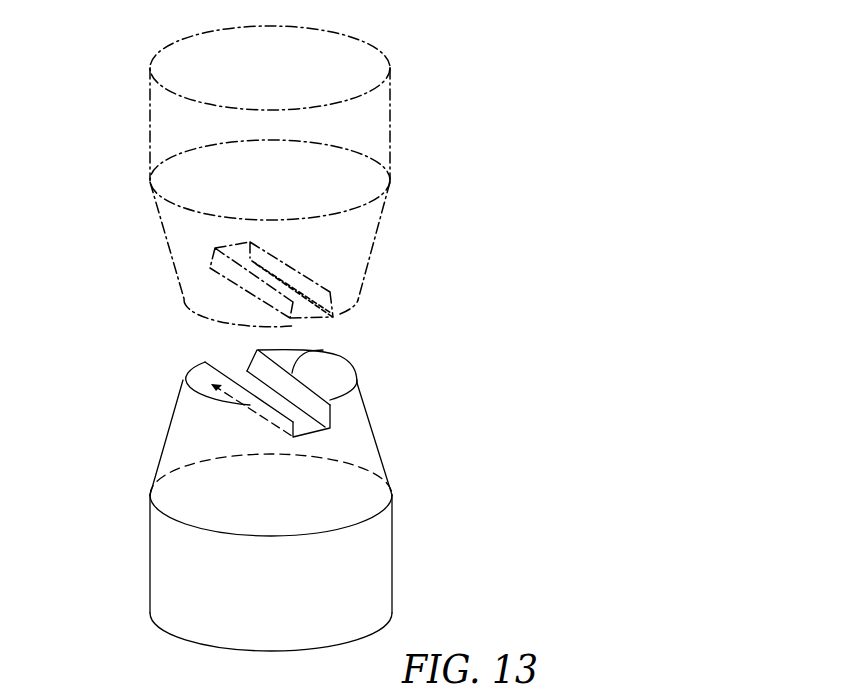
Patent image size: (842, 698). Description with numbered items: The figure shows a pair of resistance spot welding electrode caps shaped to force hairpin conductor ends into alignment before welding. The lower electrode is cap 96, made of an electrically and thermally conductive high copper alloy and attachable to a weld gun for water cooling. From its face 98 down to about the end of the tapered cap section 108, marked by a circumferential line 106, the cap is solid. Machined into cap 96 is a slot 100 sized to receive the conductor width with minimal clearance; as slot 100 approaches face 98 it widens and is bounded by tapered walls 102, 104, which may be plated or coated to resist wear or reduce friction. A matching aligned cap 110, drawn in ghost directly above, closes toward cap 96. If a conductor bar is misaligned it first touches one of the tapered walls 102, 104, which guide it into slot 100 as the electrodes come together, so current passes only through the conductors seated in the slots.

The cap 96 is at (396, 550).
The face 98 is at (330, 377).
The slot 100 is at (332, 429).
The tapered wall 102 is at (310, 347).
The tapered wall 104 is at (213, 380).
The circumferential line 106 is at (150, 495).
The tapered cap section 108 is at (167, 427).
The matching aligned cap 110 is at (393, 153).